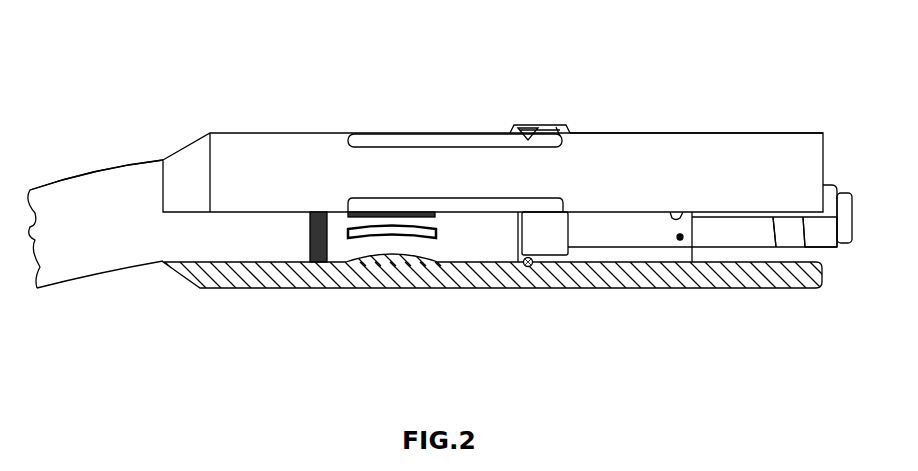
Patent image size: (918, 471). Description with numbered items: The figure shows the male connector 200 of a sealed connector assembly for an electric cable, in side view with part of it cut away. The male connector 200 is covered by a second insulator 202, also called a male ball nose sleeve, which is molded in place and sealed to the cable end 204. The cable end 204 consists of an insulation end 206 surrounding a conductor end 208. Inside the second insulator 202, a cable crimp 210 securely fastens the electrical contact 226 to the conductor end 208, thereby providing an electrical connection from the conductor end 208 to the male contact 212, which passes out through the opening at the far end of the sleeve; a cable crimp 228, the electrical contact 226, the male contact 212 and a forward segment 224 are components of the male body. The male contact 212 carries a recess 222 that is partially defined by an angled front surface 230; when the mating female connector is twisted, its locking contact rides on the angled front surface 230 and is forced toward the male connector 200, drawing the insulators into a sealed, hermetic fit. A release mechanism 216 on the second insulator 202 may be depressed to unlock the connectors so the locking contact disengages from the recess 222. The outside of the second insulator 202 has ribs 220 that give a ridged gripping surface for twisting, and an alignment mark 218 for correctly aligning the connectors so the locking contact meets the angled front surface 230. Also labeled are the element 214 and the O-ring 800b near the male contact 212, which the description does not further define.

The male connector 200 is at (752, 52).
The second insulator 202 is at (273, 167).
The cable end 204 is at (67, 283).
The insulation end 206 is at (95, 238).
The conductor end 208 is at (320, 250).
The cable crimp 210 is at (395, 232).
The male contact 212 is at (742, 233).
The lock pin 214 is at (820, 252).
The release mechanism 216 is at (532, 125).
The alignment mark 218 is at (732, 133).
The rib 220 is at (400, 138).
The recess 222 is at (785, 250).
The forward segment 224 is at (828, 247).
The electrical contact 226 is at (553, 243).
The cable crimp 228 is at (458, 240).
The angled front surface 230 is at (798, 230).
The pin 800b is at (527, 267).